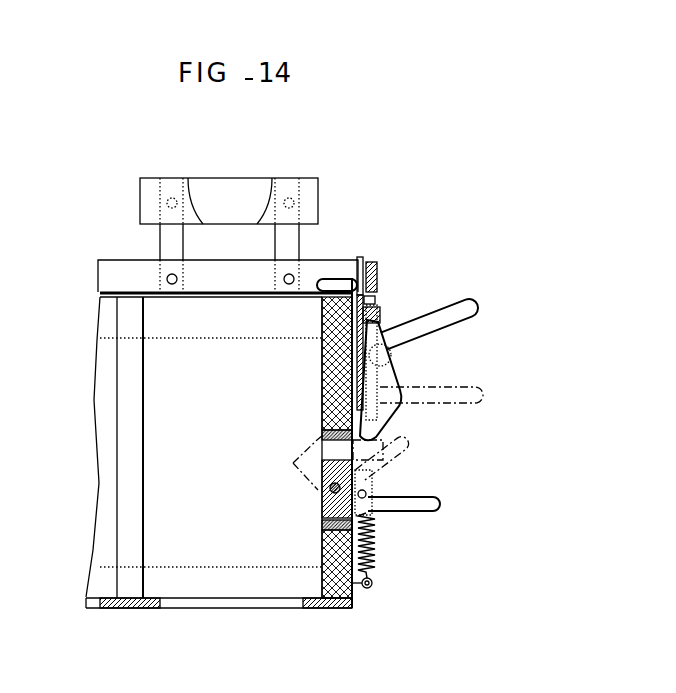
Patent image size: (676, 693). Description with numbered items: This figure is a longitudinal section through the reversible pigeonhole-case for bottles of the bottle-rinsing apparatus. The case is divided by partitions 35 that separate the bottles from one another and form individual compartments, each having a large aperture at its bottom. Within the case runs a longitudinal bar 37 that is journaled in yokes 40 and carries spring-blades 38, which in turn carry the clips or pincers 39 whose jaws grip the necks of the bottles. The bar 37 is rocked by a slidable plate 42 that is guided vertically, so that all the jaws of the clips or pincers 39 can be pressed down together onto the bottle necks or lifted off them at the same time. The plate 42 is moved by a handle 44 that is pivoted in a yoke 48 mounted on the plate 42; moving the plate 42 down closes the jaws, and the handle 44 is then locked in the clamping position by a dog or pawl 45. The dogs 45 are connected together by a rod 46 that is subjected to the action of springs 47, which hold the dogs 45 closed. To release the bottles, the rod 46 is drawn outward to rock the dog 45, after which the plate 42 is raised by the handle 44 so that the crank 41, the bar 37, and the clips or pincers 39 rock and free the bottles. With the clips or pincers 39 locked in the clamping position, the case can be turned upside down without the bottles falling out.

The partitions 35 is at (136, 460).
The longitudinal bar 37 is at (226, 272).
The spring-blades 38 is at (166, 239).
The clips or pincers 39 is at (233, 190).
The yokes 40 is at (362, 258).
The cranks 41 is at (380, 279).
The slidable plates 42 is at (368, 324).
The handles 44 is at (477, 311).
The dogs or pawls 45 is at (324, 488).
The rod 46 is at (408, 443).
The springs 47 is at (379, 549).
The yokes 48 is at (400, 362).